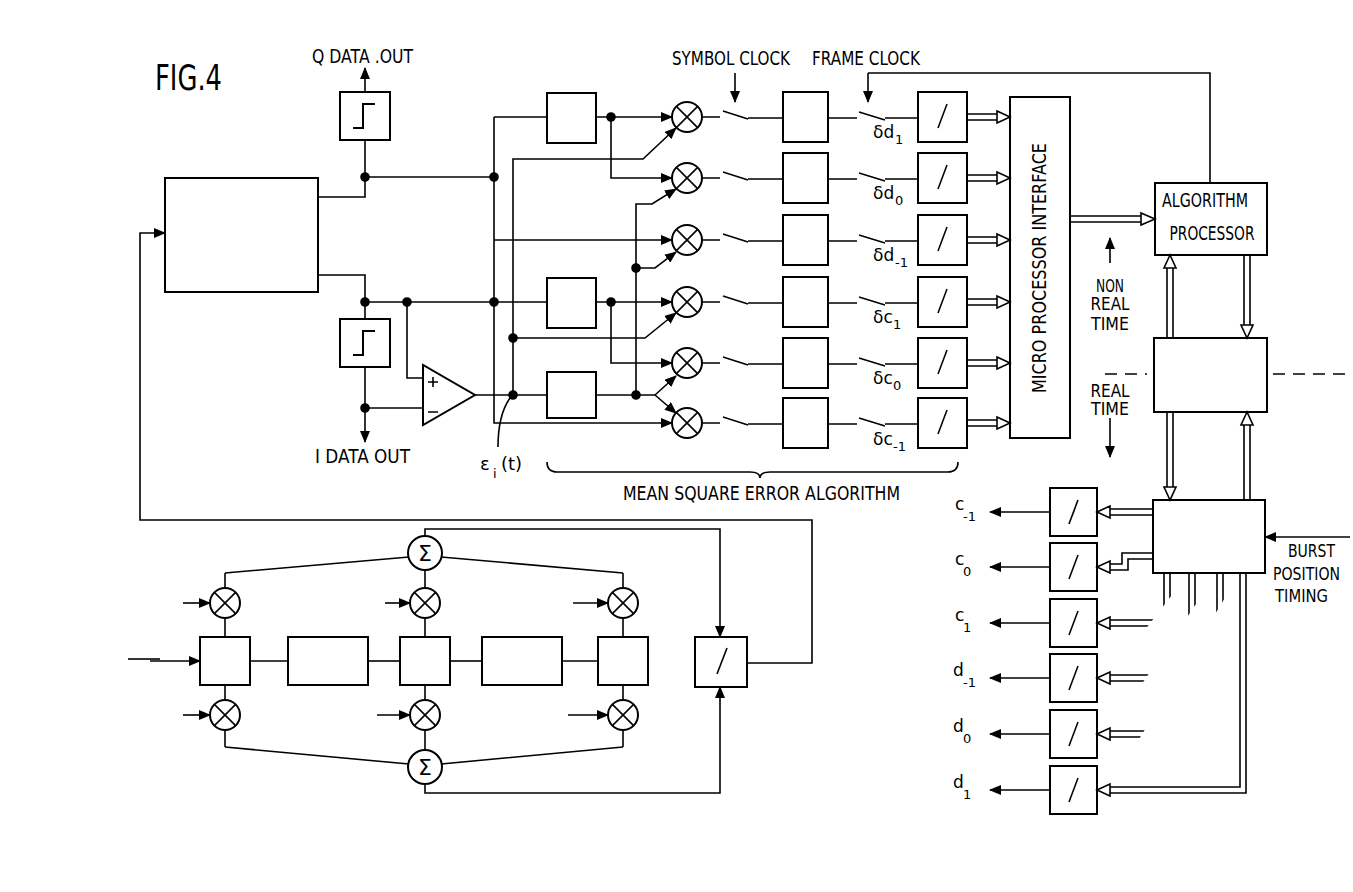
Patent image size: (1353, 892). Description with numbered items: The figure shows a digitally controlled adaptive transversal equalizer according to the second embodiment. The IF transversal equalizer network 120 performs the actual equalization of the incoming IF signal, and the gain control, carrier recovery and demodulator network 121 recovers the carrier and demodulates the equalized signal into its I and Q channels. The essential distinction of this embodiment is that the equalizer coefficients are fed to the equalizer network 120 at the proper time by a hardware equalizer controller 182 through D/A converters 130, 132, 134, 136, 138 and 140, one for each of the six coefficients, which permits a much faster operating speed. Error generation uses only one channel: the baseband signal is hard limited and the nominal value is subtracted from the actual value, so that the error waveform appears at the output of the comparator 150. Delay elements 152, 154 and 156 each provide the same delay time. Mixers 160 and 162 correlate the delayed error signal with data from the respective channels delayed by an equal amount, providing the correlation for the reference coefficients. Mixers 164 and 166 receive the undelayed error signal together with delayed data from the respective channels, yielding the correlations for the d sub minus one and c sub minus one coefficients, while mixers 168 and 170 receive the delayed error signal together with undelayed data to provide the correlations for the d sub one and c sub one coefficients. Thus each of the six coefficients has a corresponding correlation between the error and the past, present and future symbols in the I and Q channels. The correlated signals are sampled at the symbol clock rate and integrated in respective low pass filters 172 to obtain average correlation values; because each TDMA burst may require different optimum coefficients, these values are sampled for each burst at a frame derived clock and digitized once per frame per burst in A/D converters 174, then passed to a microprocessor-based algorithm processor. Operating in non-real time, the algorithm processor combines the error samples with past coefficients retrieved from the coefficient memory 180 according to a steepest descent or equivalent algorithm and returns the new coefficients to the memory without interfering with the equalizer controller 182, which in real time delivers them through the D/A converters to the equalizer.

The IF transversal equalizer network 120 is at (265, 566).
The AGC, carrier recovery and demodulator 121 is at (212, 178).
The D/A converter 130 is at (1050, 495).
The D/A converter 132 is at (1050, 551).
The D/A converter 134 is at (1050, 611).
The D/A converter 136 is at (1050, 667).
The D/A converter 138 is at (1050, 723).
The D/A converter 140 is at (1050, 782).
The comparator 150 is at (457, 408).
The delay element 152 is at (585, 93).
The delay element 154 is at (584, 278).
The delay element 156 is at (583, 372).
The mixer 160 is at (705, 156).
The mixer 162 is at (678, 352).
The mixer 164 is at (678, 105).
The mixer 166 is at (678, 290).
The mixer 168 is at (676, 229).
The mixer 170 is at (701, 401).
The low pass filter 172 is at (785, 92).
The A/D converter 174 is at (918, 101).
The coefficient memory 180 is at (1268, 352).
The equalizer controller 182 is at (1266, 508).